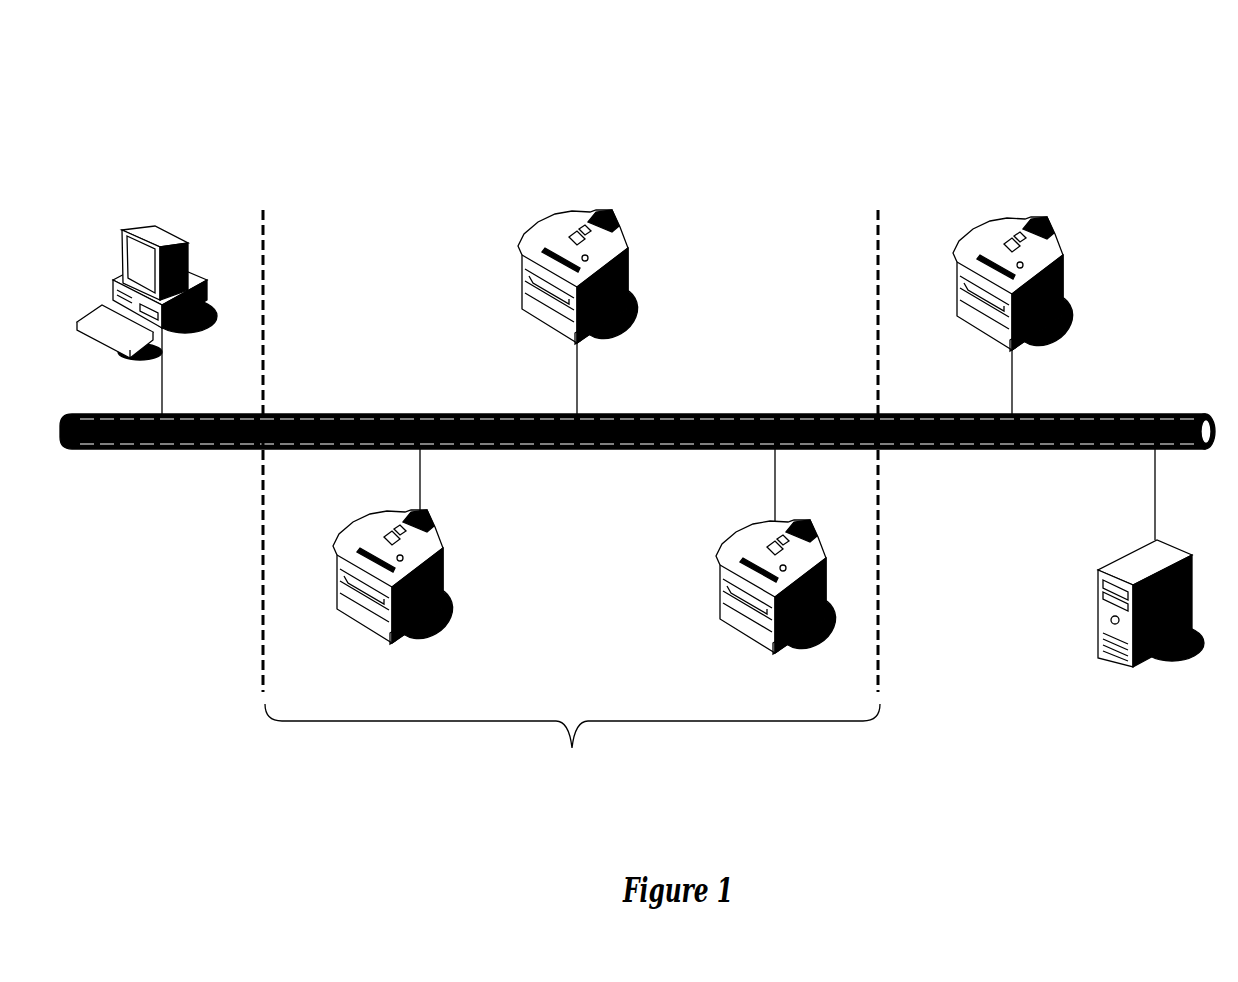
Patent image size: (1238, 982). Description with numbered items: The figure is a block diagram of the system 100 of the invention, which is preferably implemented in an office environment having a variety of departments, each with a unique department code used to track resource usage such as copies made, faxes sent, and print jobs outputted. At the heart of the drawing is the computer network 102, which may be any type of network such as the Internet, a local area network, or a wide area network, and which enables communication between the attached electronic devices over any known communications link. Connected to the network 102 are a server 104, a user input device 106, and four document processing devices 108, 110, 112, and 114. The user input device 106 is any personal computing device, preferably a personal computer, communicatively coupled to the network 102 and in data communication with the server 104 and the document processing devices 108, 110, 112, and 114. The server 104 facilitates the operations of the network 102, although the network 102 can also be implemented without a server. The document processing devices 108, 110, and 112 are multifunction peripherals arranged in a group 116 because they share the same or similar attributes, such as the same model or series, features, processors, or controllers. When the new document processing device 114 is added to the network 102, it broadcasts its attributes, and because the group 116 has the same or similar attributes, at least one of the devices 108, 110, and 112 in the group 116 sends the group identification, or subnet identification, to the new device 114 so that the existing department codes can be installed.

The system 100 is at (1059, 62).
The computer network 102 is at (97, 416).
The server 104 is at (1112, 552).
The user input device 106 is at (129, 230).
The document processing device 108 is at (537, 226).
The document processing device 110 is at (352, 525).
The document processing device 112 is at (742, 535).
The new document processing device 114 is at (980, 233).
The group 116 is at (571, 748).